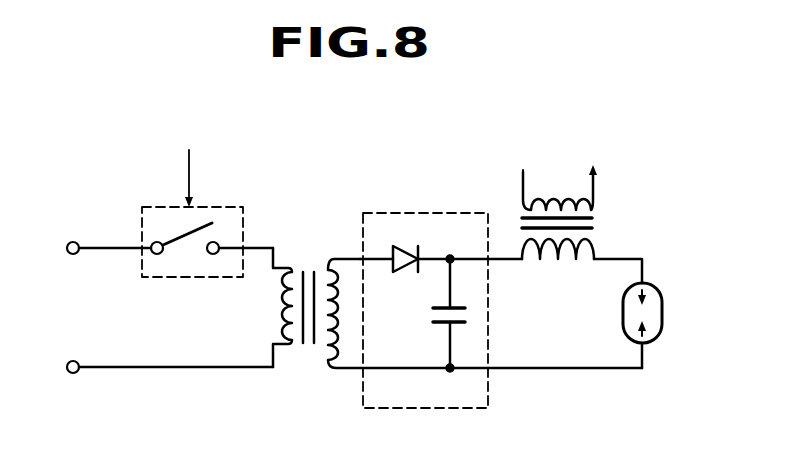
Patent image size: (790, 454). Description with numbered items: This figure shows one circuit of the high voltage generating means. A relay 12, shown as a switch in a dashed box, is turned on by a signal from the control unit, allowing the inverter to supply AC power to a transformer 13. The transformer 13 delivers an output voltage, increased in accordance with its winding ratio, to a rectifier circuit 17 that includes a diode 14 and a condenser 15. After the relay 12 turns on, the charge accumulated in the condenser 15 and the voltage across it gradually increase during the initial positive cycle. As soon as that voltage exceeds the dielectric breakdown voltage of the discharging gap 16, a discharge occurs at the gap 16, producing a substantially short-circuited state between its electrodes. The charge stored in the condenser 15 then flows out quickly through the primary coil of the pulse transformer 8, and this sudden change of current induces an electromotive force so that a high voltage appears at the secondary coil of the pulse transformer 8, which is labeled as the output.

The pulse transformer 8 is at (598, 220).
The relay 12 is at (247, 210).
The transformer 13 is at (305, 348).
The diode 14 is at (402, 274).
The condenser 15 is at (431, 322).
The discharging gap 16 is at (662, 302).
The rectifier circuit 17 is at (412, 212).